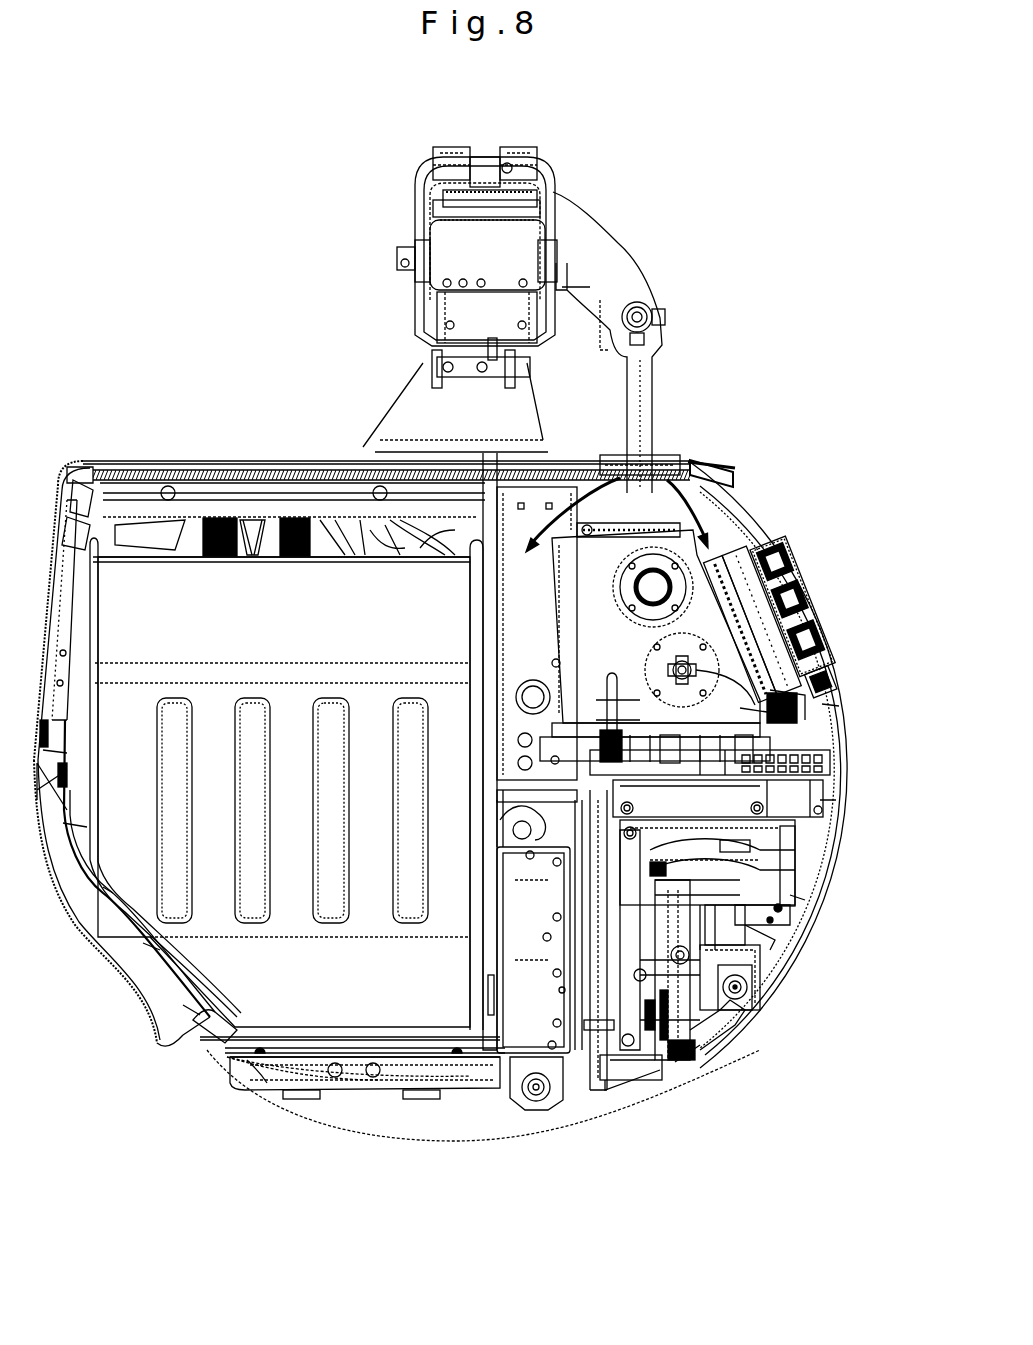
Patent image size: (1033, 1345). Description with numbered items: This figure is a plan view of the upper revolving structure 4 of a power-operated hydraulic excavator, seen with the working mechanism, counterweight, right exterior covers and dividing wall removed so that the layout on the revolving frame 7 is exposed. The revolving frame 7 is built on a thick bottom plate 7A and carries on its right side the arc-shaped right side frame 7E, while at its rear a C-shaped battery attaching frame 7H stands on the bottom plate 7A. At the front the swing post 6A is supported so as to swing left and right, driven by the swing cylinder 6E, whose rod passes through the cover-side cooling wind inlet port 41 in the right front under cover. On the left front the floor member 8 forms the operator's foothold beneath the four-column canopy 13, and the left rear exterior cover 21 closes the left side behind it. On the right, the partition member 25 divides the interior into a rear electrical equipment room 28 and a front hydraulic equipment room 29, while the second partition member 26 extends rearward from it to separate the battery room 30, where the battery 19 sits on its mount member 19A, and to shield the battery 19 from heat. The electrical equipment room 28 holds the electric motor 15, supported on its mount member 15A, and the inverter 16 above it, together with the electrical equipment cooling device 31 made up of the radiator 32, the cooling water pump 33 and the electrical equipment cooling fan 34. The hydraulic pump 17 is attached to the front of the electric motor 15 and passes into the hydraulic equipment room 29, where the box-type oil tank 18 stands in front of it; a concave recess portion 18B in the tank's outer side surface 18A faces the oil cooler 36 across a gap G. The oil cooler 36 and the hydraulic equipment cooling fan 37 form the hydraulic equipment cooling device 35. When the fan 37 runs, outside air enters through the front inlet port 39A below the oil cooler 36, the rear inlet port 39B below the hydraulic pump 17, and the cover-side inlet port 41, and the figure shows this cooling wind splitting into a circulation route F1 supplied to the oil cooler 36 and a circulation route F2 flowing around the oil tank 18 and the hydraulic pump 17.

The upper revolving structure 4 is at (293, 438).
The swing post 6A is at (500, 242).
The swing cylinder 6E is at (641, 393).
The revolving frame 7 is at (724, 463).
The bottom plate 7A is at (382, 1115).
The right side frame 7E is at (830, 714).
The battery attaching frame 7H is at (264, 1080).
The floor member 8 is at (188, 541).
The canopy 13 is at (288, 880).
The electric motor 15 is at (735, 1000).
The mount member 15A is at (748, 980).
The inverter 16 is at (797, 857).
The hydraulic pump 17 is at (665, 707).
The oil tank 18 is at (600, 608).
The outer side surface 18A is at (747, 617).
The concave recess portion 18B is at (703, 547).
The battery 19 is at (515, 1015).
The mount member 19A is at (540, 1085).
The left rear exterior cover 21 is at (103, 967).
The partition member 25 is at (767, 790).
The second partition member 26 is at (600, 1050).
The electrical equipment room 28 is at (752, 942).
The hydraulic equipment room 29 is at (768, 685).
The battery room 30 is at (458, 1078).
The electrical equipment cooling device 31 is at (682, 1068).
The radiator 32 is at (666, 1060).
The cooling water pump 33 is at (780, 903).
The electrical equipment cooling fan 34 is at (702, 1040).
The hydraulic equipment cooling device 35 is at (793, 556).
The oil cooler 36 is at (773, 667).
The hydraulic equipment cooling fan 37 is at (750, 595).
The front inlet port 39A is at (757, 637).
The rear inlet port 39B is at (817, 750).
The cover-side cooling wind inlet port for hydraulic equipment room 41 is at (627, 463).
The circulation route F1 is at (700, 514).
The circulation route F2 is at (568, 533).
The gap G is at (705, 568).